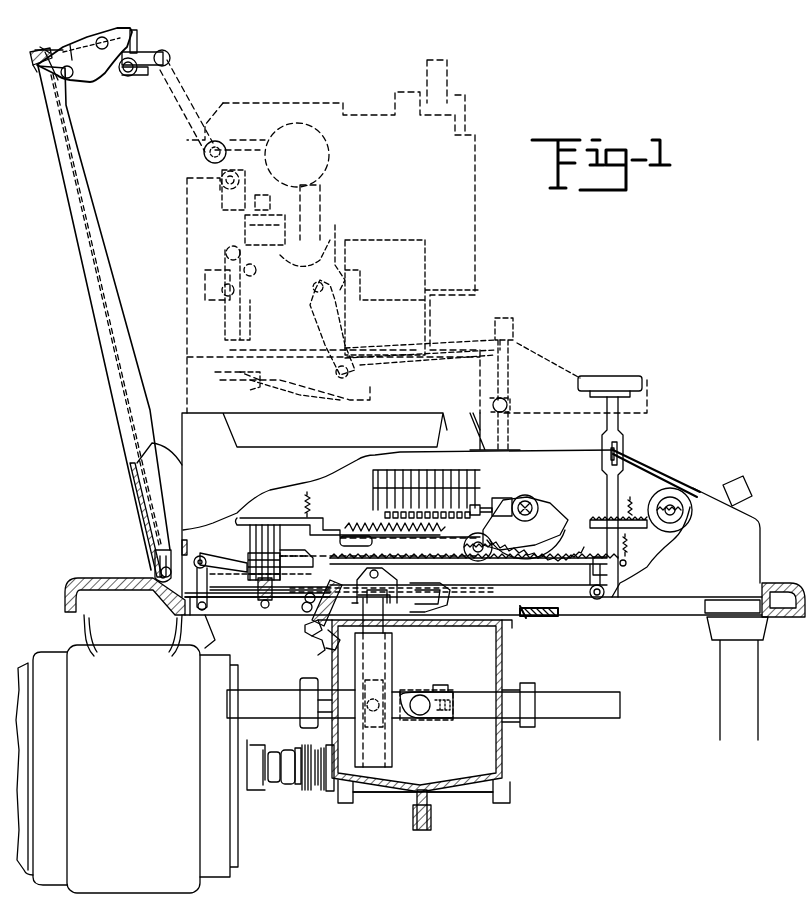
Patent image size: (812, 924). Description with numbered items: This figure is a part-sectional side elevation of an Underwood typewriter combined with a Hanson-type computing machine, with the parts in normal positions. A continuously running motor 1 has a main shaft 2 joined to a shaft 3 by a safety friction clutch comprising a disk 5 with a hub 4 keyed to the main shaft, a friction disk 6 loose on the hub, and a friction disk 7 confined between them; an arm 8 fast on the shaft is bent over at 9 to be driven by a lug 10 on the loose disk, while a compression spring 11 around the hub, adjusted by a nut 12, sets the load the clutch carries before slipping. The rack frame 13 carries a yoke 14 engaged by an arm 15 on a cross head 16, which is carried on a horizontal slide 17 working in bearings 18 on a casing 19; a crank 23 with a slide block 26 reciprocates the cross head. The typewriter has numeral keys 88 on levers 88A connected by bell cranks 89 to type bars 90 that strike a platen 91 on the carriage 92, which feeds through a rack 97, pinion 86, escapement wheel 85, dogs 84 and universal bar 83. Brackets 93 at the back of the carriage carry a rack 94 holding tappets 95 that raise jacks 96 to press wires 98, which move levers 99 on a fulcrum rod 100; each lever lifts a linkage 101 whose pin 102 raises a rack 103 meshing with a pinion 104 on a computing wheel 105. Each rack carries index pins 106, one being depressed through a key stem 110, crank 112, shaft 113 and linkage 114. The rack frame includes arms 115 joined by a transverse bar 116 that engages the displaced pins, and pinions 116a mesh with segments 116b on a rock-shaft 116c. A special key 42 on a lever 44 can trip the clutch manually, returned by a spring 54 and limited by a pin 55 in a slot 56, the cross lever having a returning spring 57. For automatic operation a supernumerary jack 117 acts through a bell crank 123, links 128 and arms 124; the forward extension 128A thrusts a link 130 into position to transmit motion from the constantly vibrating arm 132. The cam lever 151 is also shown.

The motor 1 is at (127, 754).
The main shaft 2 is at (280, 752).
The shaft 3 is at (330, 793).
The hub 4 is at (272, 783).
The disk 5 is at (317, 790).
The friction disk 6 is at (302, 793).
The friction disk 7 is at (309, 793).
The arm 8 is at (323, 792).
The bent-over portion 9 is at (290, 752).
The lug 10 is at (305, 708).
The compression spring 11 is at (290, 785).
The nut 12 is at (284, 793).
The rack frame 13 is at (471, 505).
The yoke or carrier 14 is at (372, 585).
The arm 15 is at (372, 612).
The cross head 16 is at (403, 642).
The horizontal slide 17 is at (485, 705).
The bearings 18 is at (318, 672).
The casing 19 is at (392, 790).
The crank 23 is at (415, 716).
The slide block 26 is at (378, 718).
The key 42 is at (622, 390).
The lever 44 is at (592, 592).
The spring 54 is at (630, 545).
The pin 55 is at (622, 456).
The slot 56 is at (620, 445).
The returning spring 57 is at (447, 600).
The universal bar 83 is at (302, 257).
The dogs 84 is at (258, 270).
The escapement wheel 85 is at (245, 198).
The pinion 86 is at (262, 225).
The numeral keys 88 is at (515, 325).
The levers 88A is at (460, 345).
The bell cranks 89 is at (350, 327).
The type bars 90 is at (400, 300).
The platen 91 is at (297, 155).
The carriage 92 is at (310, 108).
The brackets 93 is at (172, 92).
The rack 94 is at (125, 76).
The tappets 95 is at (158, 52).
The jacks 96 is at (134, 28).
The rack 97 is at (270, 200).
The wires 98 is at (148, 497).
The levers 99 is at (198, 556).
The fulcrum rod 100 is at (205, 556).
The linkages 101 is at (250, 578).
The pin 102 is at (285, 548).
The rack 103 is at (288, 518).
The pinion 104 is at (705, 480).
The computing wheel 105 is at (692, 510).
The index pins 106 is at (430, 525).
The stem 110 is at (508, 402).
The crank 112 is at (510, 500).
The shaft 113 is at (456, 482).
The linkage 114 is at (470, 512).
The arms 115 is at (362, 535).
The transverse horizontal bar 116 is at (342, 530).
The pinions 116a is at (630, 567).
The segments 116b is at (548, 510).
The rock-shaft 116c is at (525, 495).
The supernumerary jack 117 is at (62, 50).
The bell crank 123 is at (190, 612).
The arms 124 is at (272, 590).
The links 128 is at (232, 606).
The forward extension 128A is at (290, 605).
The link 130 is at (305, 630).
The arm 132 is at (312, 645).
The cam lever 151 is at (99, 38).